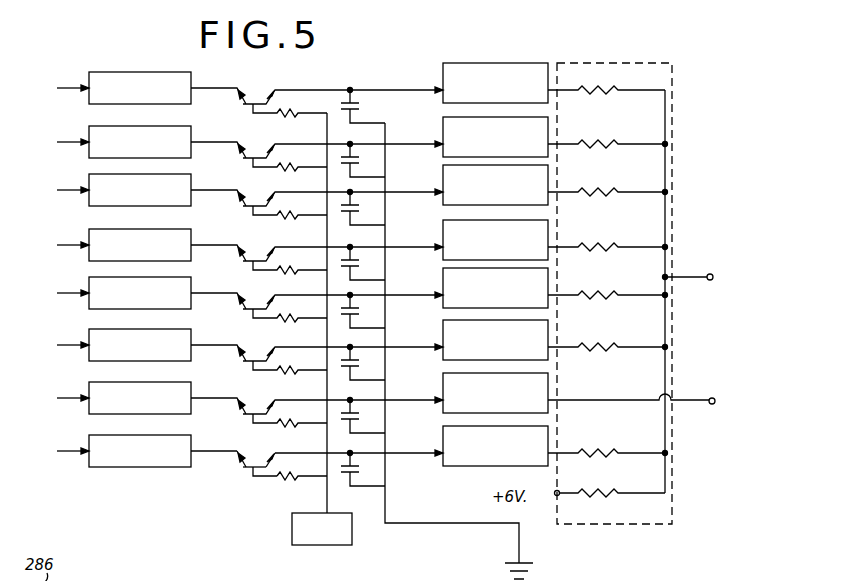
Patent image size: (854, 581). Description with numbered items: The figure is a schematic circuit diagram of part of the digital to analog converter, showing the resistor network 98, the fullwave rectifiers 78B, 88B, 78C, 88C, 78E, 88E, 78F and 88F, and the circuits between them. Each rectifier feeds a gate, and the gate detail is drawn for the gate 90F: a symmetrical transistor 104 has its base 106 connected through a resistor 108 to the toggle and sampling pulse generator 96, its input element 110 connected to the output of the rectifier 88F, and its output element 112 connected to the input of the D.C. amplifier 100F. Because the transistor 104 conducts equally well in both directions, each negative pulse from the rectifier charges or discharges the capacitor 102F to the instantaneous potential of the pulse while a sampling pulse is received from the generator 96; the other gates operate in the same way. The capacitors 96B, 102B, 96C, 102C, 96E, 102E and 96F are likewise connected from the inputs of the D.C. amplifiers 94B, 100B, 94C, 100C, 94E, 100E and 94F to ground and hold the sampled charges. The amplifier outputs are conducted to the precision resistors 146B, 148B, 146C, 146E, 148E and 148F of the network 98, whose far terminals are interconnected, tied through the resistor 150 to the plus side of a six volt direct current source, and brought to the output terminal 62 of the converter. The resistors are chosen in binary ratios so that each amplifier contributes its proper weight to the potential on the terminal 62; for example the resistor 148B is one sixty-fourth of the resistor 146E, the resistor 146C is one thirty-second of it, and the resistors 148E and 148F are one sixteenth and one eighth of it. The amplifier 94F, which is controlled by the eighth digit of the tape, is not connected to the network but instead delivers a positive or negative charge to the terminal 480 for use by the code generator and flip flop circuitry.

The fullwave rectifier 78B is at (124, 88).
The fullwave rectifier 88B is at (124, 142).
The fullwave rectifier 78C is at (124, 190).
The fullwave rectifier 88C is at (124, 245).
The fullwave rectifier 78E is at (124, 293).
The fullwave rectifier 88E is at (124, 345).
The fullwave rectifier 78F is at (124, 398).
The fullwave rectifier 88F is at (124, 451).
The D.C. amplifier 94B is at (491, 83).
The D.C. amplifier 100B is at (491, 137).
The D.C. amplifier 94C is at (491, 185).
The D.C. amplifier 100C is at (491, 240).
The D.C. amplifier 94E is at (491, 288).
The D.C. amplifier 100E is at (491, 340).
The D.C. amplifier 94F is at (491, 393).
The D.C. amplifier 100F is at (491, 446).
The storage capacitor 96B is at (362, 106).
The capacitor 102B is at (362, 160).
The capacitor 96C is at (362, 210).
The capacitor 102C is at (362, 265).
The capacitor 96E is at (362, 313).
The capacitor 102E is at (362, 365).
The capacitor 96F is at (362, 418).
The capacitor 102F is at (362, 471).
The precision resistor 146B is at (600, 94).
The precision resistor 148B is at (600, 148).
The precision resistor 146C is at (600, 196).
The precision resistor 146E is at (600, 299).
The precision resistor 148E is at (600, 351).
The precision resistor 148F is at (600, 457).
The resistor 150 is at (600, 497).
The toggle and sampling pulse generator 96 is at (322, 529).
The resistor network 98 is at (670, 80).
The output terminal 62 is at (715, 275).
The terminal 480 is at (716, 400).
The transistor 104 is at (250, 461).
The output element 112 is at (278, 450).
The base 106 is at (267, 468).
The input element 110 is at (241, 464).
The gate 90F is at (242, 473).
The resistor 108 is at (283, 489).